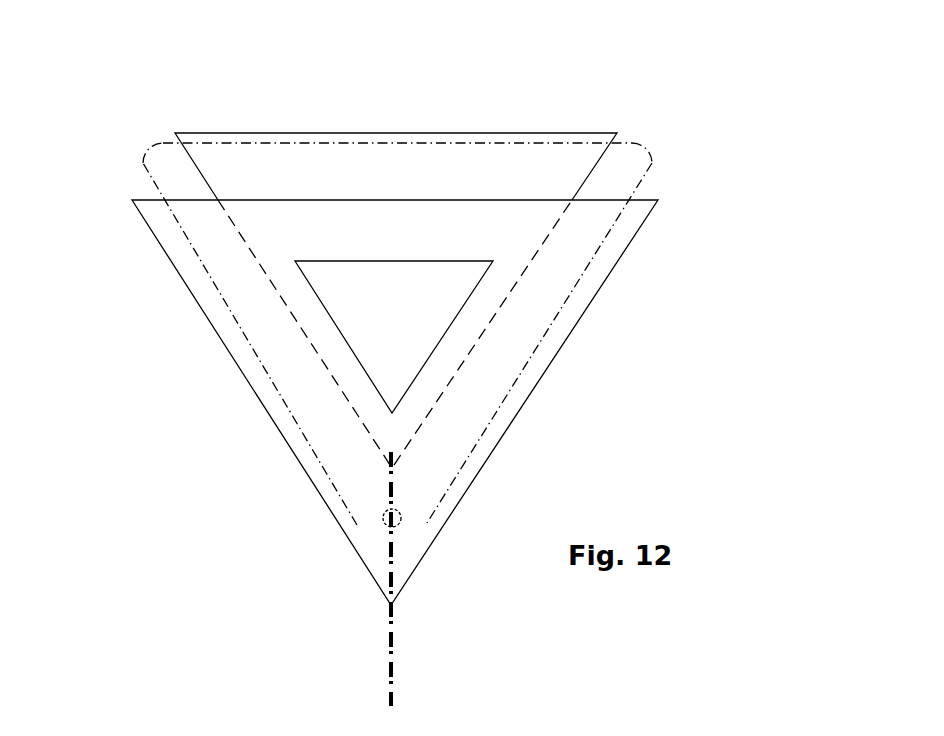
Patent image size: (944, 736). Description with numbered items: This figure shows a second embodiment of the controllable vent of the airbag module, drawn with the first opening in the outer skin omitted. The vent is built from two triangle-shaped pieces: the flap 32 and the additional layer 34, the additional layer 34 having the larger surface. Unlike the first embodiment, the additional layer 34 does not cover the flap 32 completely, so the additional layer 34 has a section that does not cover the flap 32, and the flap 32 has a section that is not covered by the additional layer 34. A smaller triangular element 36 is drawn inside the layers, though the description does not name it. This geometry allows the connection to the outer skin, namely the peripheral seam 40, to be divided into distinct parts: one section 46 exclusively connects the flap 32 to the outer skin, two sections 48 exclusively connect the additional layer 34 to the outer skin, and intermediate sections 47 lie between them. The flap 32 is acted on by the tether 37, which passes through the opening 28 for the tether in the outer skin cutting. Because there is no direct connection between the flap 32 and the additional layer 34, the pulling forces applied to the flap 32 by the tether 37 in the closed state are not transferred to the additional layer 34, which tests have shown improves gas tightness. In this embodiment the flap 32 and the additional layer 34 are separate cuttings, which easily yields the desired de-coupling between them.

The opening for a tether 28 is at (398, 523).
The flap 32 is at (272, 168).
The additional layer 34 is at (508, 352).
The triangular opening 36 is at (370, 312).
The tether 37 is at (390, 636).
The peripheral seam 40 is at (415, 308).
The section of the seam exclusively connecting the flap 46 is at (457, 142).
The intermediate sections 47 is at (145, 153).
The sections of the seam exclusively connecting the additional layer 48 is at (213, 288).